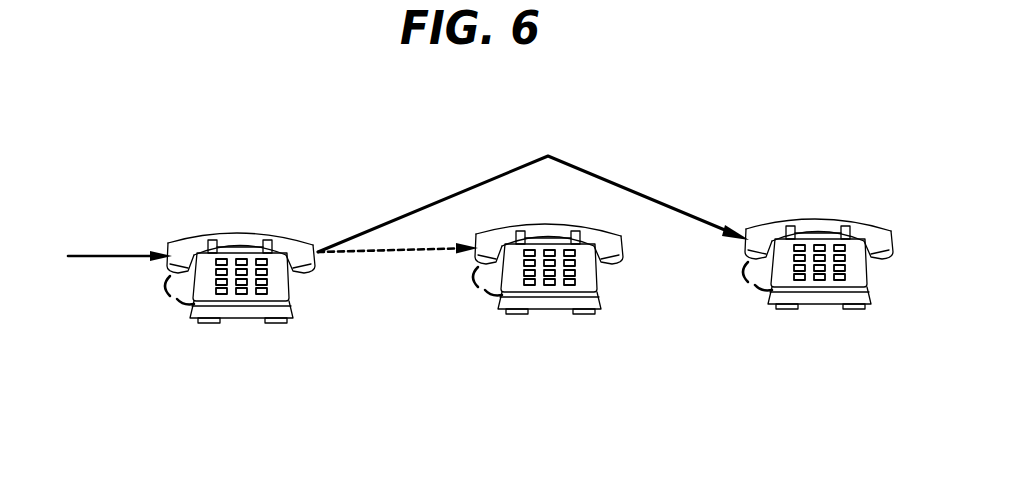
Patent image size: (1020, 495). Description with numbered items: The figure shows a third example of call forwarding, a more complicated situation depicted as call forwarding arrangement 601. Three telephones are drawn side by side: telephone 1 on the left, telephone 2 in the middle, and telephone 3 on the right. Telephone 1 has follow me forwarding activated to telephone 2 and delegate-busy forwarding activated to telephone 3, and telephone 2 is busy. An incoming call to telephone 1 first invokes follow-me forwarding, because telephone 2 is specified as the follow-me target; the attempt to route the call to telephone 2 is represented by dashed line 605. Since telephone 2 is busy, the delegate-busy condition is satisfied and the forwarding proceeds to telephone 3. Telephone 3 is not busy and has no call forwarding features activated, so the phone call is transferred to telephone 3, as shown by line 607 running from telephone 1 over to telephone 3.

The call forwarding arrangement 601 is at (237, 146).
The dashed line 605 is at (422, 248).
The line 607 is at (612, 180).
The telephone 1 is at (181, 295).
The telephone 2 is at (485, 272).
The telephone 3 is at (762, 251).